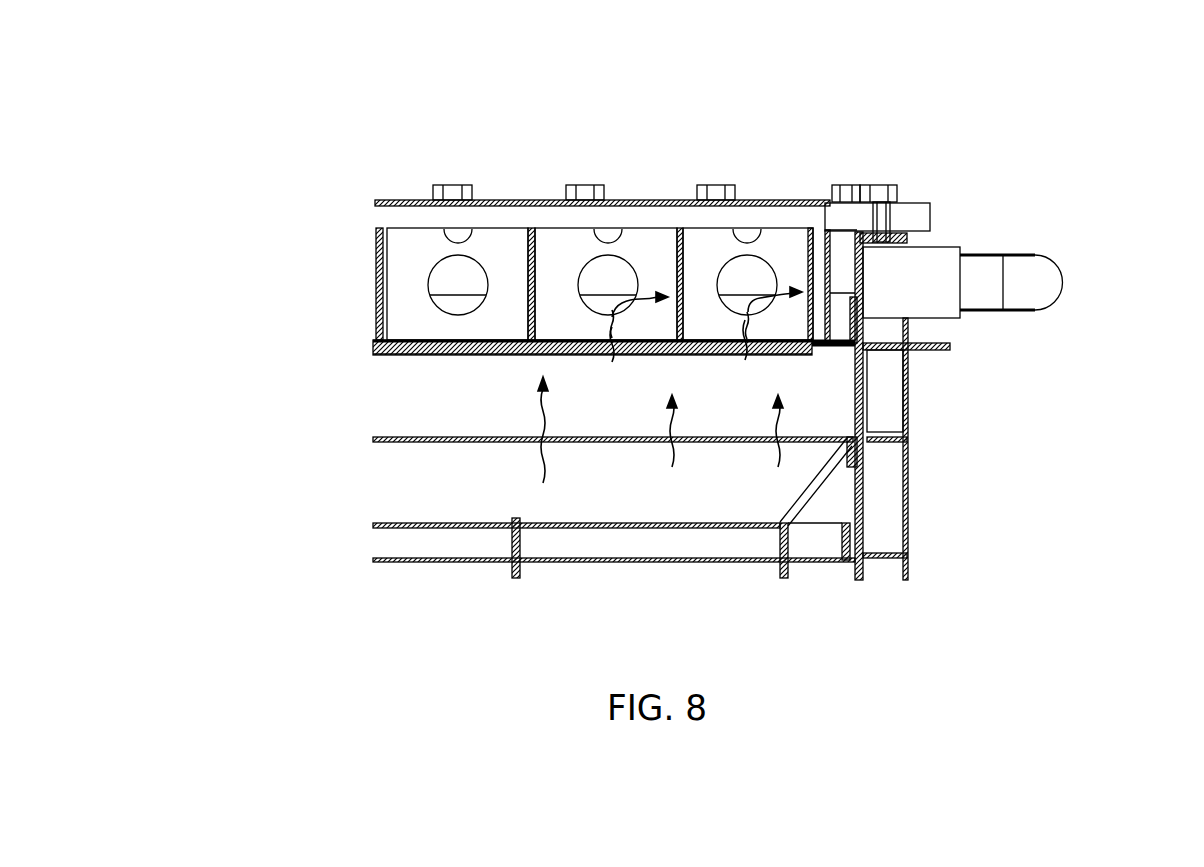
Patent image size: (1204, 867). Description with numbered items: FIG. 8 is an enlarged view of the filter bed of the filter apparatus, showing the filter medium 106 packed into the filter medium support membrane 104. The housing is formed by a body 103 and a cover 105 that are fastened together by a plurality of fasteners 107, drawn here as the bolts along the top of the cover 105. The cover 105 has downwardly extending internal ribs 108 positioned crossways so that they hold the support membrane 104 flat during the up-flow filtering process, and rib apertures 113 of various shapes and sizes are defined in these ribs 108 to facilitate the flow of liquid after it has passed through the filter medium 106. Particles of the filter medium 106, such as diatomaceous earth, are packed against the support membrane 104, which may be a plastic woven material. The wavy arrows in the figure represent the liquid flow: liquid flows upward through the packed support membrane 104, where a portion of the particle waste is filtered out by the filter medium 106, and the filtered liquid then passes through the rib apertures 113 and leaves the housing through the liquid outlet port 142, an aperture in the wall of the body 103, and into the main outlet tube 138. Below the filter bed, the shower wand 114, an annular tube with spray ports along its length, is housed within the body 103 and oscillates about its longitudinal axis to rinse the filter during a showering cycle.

The body 103 is at (864, 525).
The filter medium support membrane 104 is at (592, 350).
The cover 105 is at (400, 215).
The filter medium 106 is at (778, 353).
The fasteners 107 is at (716, 186).
The internal ribs 108 is at (378, 277).
The rib apertures 113 is at (607, 265).
The shower wand 114 is at (672, 547).
The main outlet tube 138 is at (1040, 275).
The liquid outlet port 142 is at (864, 280).